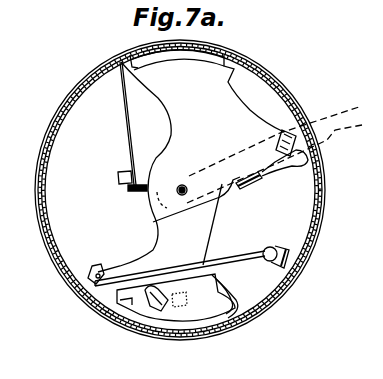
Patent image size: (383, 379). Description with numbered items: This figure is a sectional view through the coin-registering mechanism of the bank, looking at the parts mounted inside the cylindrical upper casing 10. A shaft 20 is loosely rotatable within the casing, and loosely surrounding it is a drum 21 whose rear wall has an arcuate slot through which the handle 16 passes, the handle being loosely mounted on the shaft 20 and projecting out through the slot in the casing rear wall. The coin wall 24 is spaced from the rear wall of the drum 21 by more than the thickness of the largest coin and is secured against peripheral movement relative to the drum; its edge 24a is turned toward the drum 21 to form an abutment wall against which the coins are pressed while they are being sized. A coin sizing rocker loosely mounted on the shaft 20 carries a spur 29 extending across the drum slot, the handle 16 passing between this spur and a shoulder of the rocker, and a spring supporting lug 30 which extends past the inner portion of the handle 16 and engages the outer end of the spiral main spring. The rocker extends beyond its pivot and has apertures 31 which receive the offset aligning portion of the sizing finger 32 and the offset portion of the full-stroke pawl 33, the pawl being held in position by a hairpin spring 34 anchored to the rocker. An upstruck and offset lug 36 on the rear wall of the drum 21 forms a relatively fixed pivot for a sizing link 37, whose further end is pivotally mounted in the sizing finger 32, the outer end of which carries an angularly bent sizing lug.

The upper casing 10 is at (325, 209).
The handle 16 is at (327, 126).
The shaft 20 is at (182, 186).
The drum 21 is at (72, 106).
The coin wall 24 is at (191, 161).
The edge of coin wall 24a is at (128, 149).
The spur 29 is at (314, 161).
The spring supporting lug 30 is at (253, 186).
The apertures 31 is at (146, 292).
The sizing finger 32 is at (93, 275).
The full-stroke pawl 33 is at (205, 283).
The hairpin spring 34 is at (236, 298).
The upstruck and offset lug 36 is at (278, 251).
The sizing link 37 is at (239, 258).